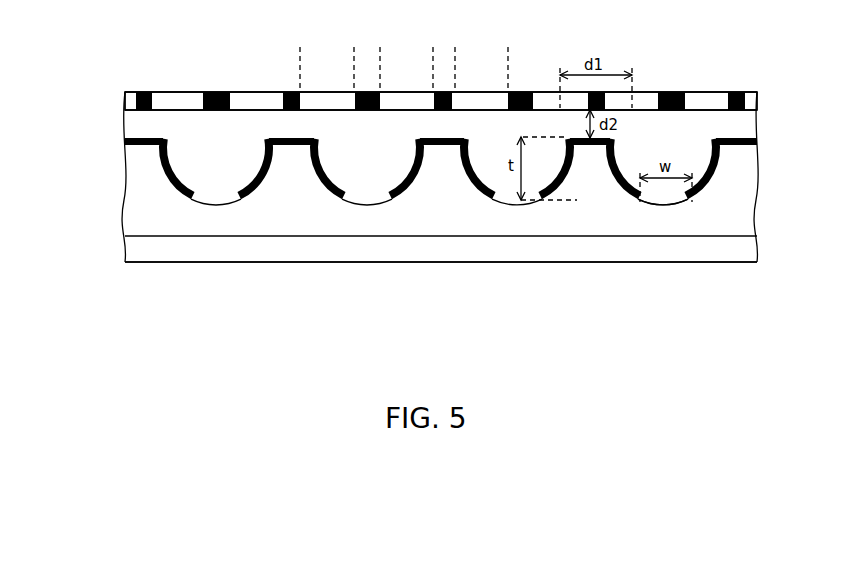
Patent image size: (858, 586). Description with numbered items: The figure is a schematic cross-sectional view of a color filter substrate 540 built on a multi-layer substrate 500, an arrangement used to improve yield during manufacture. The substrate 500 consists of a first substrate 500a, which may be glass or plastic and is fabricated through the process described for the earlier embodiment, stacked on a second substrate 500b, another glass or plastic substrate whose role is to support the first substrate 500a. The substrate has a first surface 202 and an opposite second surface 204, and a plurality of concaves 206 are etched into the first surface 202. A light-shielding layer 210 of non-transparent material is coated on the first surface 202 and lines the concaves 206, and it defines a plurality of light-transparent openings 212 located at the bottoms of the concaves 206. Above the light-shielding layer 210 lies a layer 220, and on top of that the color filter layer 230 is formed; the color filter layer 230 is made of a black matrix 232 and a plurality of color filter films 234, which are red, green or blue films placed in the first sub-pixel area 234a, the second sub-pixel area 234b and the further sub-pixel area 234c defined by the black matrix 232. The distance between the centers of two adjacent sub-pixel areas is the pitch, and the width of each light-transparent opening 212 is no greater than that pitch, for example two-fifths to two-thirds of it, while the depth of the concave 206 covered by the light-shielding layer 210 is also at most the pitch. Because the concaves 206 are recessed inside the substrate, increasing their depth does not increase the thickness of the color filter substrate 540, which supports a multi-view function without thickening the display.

The first surface 202 is at (152, 128).
The second surface 204 is at (197, 265).
The concave 206 is at (223, 153).
The light-shielding layer 210 is at (757, 141).
The light-transparent opening 212 is at (666, 208).
The transparent layer 220 is at (762, 99).
The color filter layer 230 is at (783, 36).
The black matrix 232 is at (738, 92).
The color filter film 234 is at (703, 92).
The first sub-pixel area 234a is at (433, 50).
The second sub-pixel area 234b is at (354, 50).
The sub-pixel area 234c is at (508, 50).
The substrate 500 is at (822, 200).
The first substrate 500a is at (740, 216).
The second substrate 500b is at (740, 250).
The color filter substrate 540 is at (811, 306).